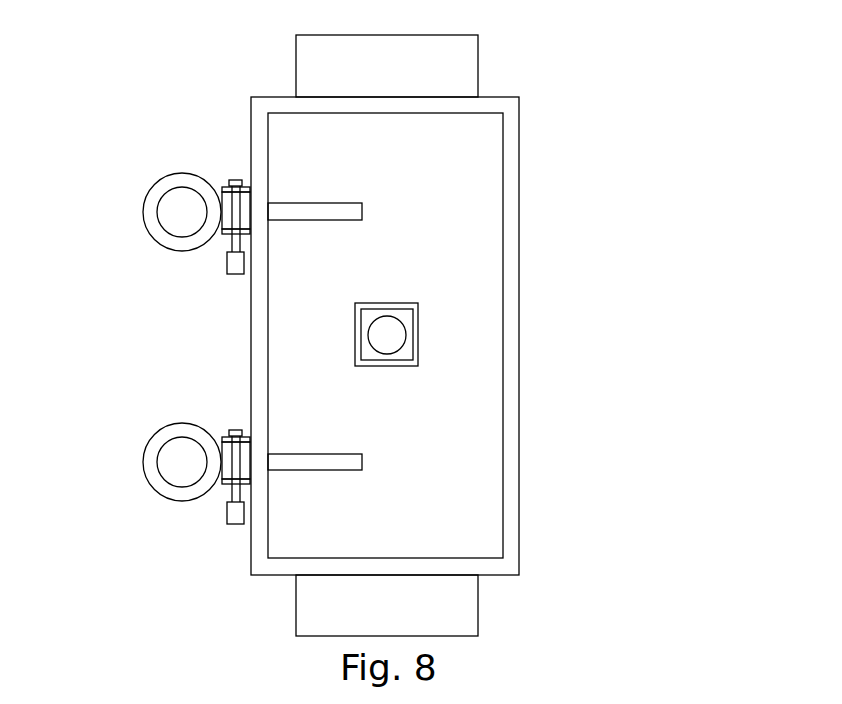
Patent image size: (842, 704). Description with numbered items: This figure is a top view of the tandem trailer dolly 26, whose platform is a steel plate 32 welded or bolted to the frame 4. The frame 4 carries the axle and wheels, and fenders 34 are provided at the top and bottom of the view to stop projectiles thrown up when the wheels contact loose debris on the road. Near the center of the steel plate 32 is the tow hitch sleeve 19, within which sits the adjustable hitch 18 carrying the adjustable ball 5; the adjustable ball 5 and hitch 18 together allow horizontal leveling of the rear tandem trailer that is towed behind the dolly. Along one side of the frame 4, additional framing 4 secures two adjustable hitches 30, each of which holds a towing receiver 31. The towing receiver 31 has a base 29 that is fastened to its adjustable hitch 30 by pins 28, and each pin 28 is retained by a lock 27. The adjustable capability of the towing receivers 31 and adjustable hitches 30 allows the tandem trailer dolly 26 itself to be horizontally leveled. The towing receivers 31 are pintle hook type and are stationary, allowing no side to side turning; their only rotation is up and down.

The frame 4 is at (449, 322).
The adjustable ball 5 is at (540, 246).
The adjustable hitch 18 is at (508, 314).
The tow hitch sleeve 19 is at (480, 249).
The tandem trailer dolly 26 is at (408, 331).
The lock 27 is at (179, 388).
The pin 28 is at (171, 247).
The base 29 is at (175, 344).
The adjustable hitch 30 is at (175, 293).
The towing receiver 31 is at (124, 318).
The steel plate 32 is at (460, 335).
The fender 34 is at (462, 331).